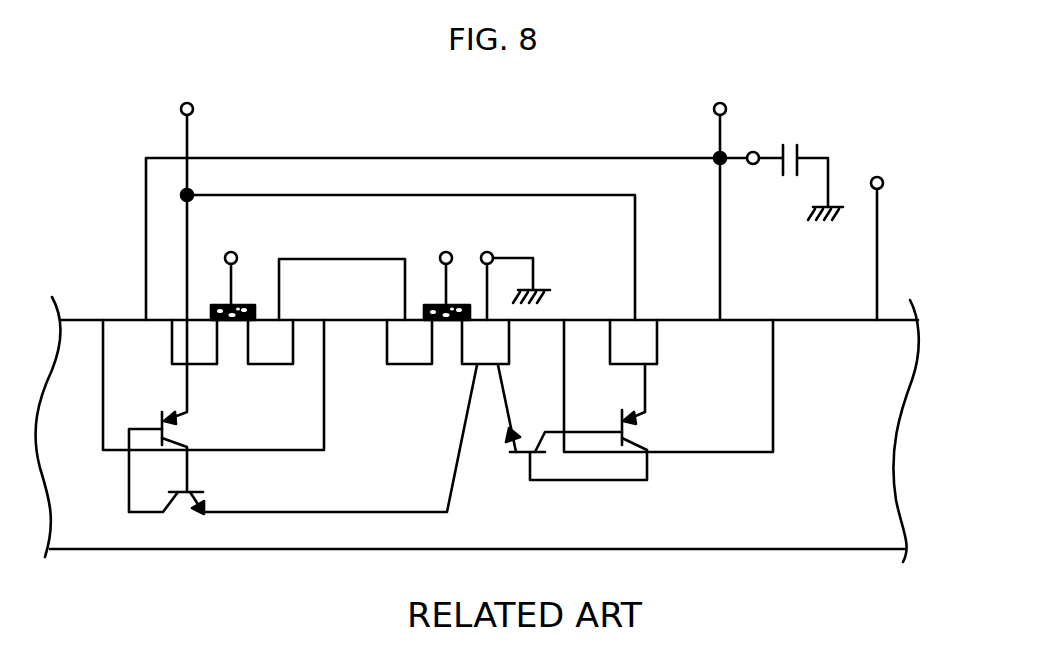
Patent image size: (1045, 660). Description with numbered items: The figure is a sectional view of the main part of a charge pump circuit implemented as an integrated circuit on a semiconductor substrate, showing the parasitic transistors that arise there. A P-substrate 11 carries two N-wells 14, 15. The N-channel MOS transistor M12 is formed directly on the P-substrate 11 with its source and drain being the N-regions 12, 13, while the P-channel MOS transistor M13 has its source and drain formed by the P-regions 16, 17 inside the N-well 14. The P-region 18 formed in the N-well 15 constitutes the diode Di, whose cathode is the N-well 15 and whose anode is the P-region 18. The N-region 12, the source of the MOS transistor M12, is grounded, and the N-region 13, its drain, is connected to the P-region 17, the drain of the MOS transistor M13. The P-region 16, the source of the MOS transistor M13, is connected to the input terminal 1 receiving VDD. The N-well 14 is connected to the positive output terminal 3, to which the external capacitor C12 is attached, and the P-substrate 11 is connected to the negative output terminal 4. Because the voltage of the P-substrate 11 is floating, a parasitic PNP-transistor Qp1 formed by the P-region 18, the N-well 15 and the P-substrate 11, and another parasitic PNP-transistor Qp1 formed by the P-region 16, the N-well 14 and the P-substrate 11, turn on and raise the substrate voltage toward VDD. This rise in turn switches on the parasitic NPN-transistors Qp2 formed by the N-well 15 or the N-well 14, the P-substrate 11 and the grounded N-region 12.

The input terminal 1 is at (194, 109).
The positive output terminal 3 is at (713, 109).
The negative output terminal 4 is at (884, 183).
The P-substrate 11 is at (762, 549).
The N-region 12 is at (493, 319).
The N-region 13 is at (395, 319).
The N-well 14 is at (292, 450).
The N-well 15 is at (678, 452).
The P-region 16 is at (181, 319).
The P-region 17 is at (289, 319).
The P-region 18 is at (651, 319).
The N-channel MOS transistor M12 is at (442, 381).
The P-channel MOS transistor M13 is at (232, 376).
The capacitor C12 is at (784, 168).
The parasitic PNP-transistor Qp1 is at (383, 438).
The parasitic NPN-transistor Qp2 is at (375, 455).
The diode Di is at (672, 389).